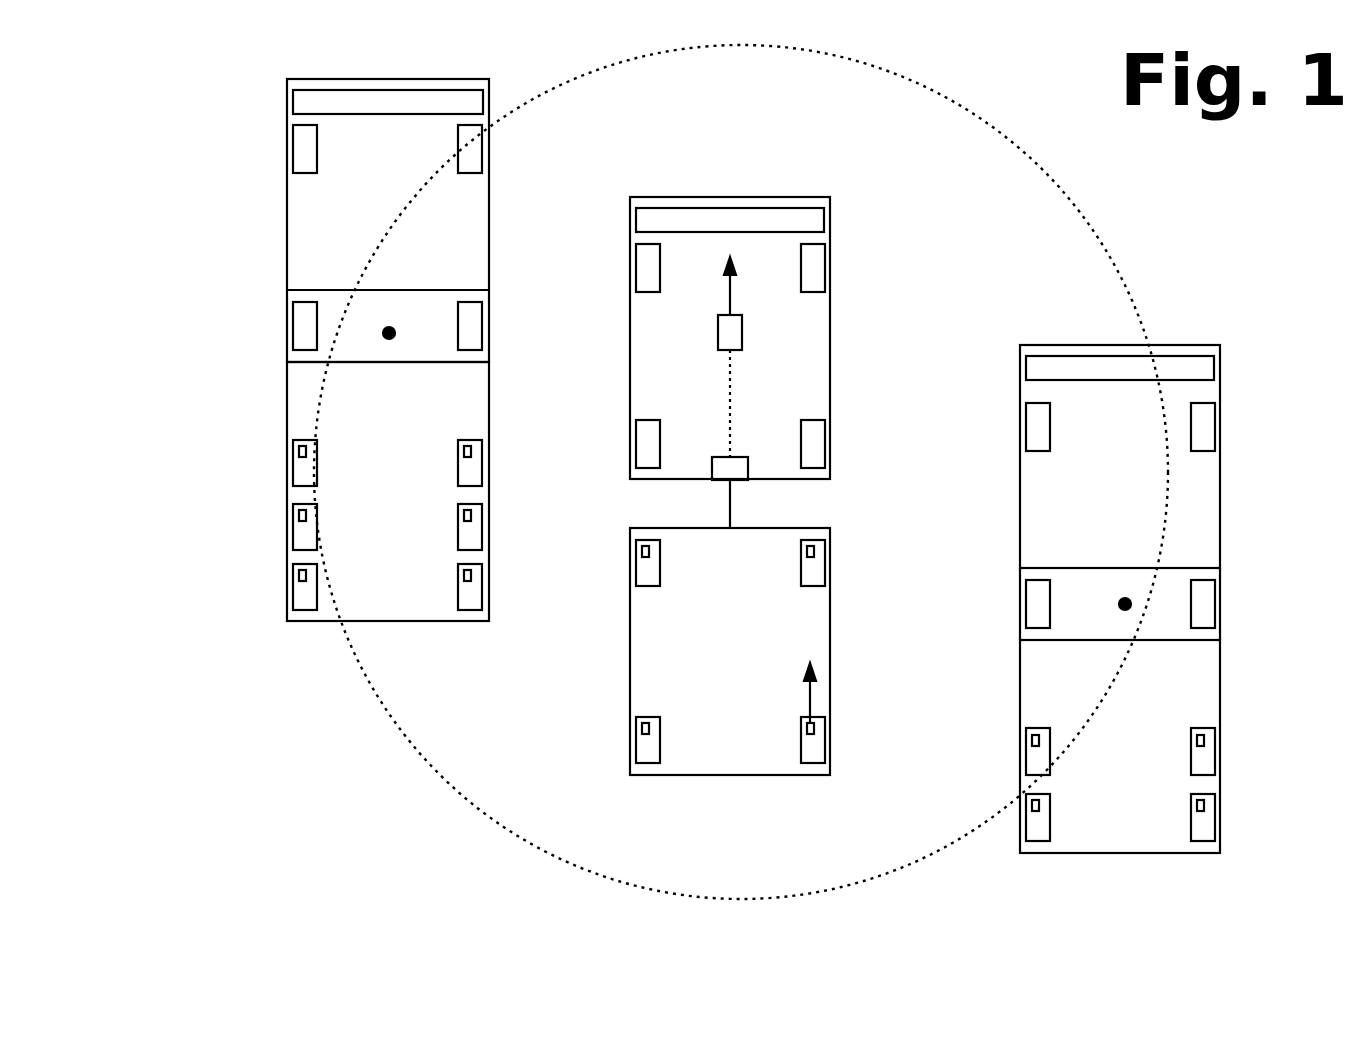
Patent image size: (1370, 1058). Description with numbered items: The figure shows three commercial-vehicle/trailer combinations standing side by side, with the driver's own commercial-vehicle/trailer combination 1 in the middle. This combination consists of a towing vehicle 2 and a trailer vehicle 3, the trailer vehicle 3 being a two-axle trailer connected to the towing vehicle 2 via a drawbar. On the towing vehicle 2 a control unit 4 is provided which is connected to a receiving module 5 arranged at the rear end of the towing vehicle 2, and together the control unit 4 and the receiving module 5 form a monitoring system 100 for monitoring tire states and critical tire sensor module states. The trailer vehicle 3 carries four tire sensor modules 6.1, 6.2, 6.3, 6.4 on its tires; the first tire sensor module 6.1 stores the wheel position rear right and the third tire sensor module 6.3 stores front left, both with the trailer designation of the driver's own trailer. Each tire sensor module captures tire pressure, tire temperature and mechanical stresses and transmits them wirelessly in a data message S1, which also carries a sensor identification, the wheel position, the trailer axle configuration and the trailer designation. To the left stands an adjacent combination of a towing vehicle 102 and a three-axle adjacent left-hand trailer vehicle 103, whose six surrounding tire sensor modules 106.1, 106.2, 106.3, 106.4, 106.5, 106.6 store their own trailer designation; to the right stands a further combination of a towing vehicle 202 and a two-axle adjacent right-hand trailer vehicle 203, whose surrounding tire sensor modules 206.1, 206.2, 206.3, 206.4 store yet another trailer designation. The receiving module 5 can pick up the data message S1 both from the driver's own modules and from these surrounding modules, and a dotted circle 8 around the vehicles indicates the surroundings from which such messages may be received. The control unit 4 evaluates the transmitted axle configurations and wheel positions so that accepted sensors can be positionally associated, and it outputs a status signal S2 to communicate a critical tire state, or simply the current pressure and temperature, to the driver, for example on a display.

The commercial-vehicle/trailer combination 1 is at (787, 186).
The towing vehicle 2 is at (730, 196).
The trailer vehicle 3 is at (730, 778).
The control unit 4 is at (742, 332).
The receiving module 5 is at (712, 468).
The first tire sensor module 6.1 is at (810, 734).
The tire sensor module 6.2 is at (814, 552).
The third tire sensor module 6.3 is at (649, 552).
The tire sensor module 6.4 is at (642, 729).
The surroundings region 8 is at (738, 45).
The monitoring system 100 is at (791, 400).
The towing vehicle 102 is at (287, 220).
The adjacent left-hand trailer vehicle 103 is at (387, 621).
The surrounding tire sensor module 106.1 is at (467, 581).
The surrounding tire sensor module 106.2 is at (471, 516).
The surrounding tire sensor module 106.3 is at (471, 451).
The surrounding tire sensor module 106.4 is at (299, 451).
The surrounding tire sensor module 106.5 is at (299, 515).
The surrounding tire sensor module 106.6 is at (299, 576).
The towing vehicle 202 is at (1221, 492).
The adjacent right-hand trailer vehicle 203 is at (1221, 710).
The surrounding tire sensor module 206.1 is at (1204, 806).
The surrounding tire sensor module 206.2 is at (1204, 740).
The surrounding tire sensor module 206.3 is at (1032, 740).
The surrounding tire sensor module 206.4 is at (1036, 811).
The data message S1 is at (810, 693).
The status signal S2 is at (730, 290).